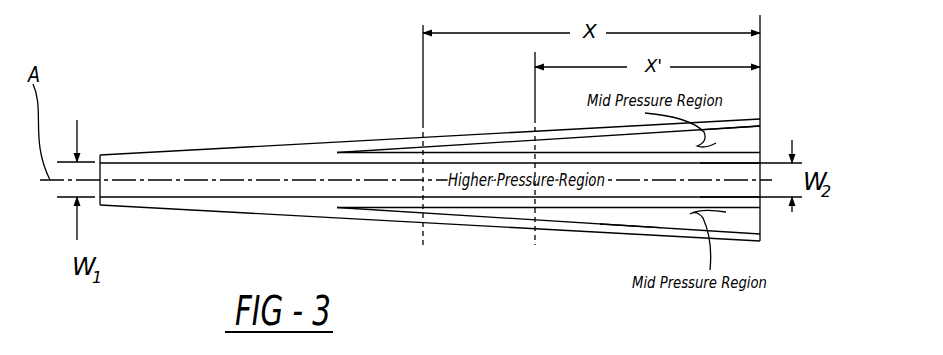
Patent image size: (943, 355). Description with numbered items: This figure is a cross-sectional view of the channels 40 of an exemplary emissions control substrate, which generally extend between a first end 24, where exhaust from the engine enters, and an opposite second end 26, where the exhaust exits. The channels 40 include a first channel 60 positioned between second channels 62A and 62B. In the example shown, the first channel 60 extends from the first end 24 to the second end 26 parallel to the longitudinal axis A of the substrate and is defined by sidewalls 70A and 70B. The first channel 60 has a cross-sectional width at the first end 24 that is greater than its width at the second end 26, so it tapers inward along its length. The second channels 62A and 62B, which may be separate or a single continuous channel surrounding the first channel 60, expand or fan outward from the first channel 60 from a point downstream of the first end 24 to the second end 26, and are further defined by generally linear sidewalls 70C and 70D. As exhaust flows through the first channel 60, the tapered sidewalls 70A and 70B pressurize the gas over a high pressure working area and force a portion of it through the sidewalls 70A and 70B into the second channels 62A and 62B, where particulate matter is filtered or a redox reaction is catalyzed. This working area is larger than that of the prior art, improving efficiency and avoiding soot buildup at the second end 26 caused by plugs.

The first end 24 is at (99, 155).
The second end 26 is at (763, 127).
The channels 40 is at (230, 112).
The first channel 60 is at (145, 192).
The second channel 62A is at (527, 148).
The second channel 62B is at (603, 212).
The sidewall 70A is at (740, 162).
The sidewall 70B is at (752, 199).
The sidewall 70C is at (745, 127).
The sidewall 70D is at (630, 230).